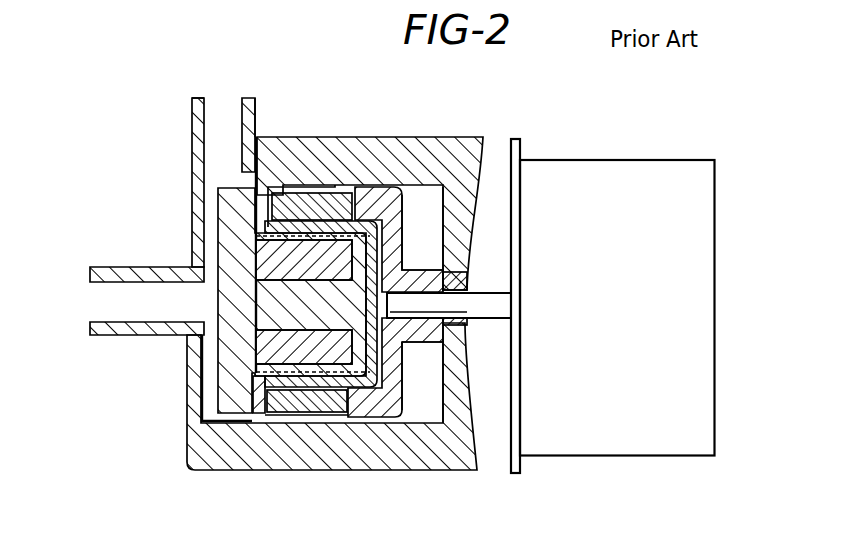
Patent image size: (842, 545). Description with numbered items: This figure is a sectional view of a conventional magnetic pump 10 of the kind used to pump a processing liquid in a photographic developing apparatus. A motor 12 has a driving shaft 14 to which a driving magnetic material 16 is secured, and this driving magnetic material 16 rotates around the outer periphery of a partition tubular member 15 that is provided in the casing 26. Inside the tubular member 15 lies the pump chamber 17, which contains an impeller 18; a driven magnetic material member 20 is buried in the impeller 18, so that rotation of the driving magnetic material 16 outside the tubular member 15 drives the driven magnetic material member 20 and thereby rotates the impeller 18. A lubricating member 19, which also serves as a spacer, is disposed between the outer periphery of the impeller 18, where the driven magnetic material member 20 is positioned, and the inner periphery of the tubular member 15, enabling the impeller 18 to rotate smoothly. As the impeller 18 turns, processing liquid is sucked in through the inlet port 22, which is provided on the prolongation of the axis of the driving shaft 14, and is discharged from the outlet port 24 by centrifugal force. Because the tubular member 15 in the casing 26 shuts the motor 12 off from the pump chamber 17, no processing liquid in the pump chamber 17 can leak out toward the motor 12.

The magnetic pump 10 is at (531, 92).
The motor 12 is at (602, 168).
The driving shaft 14 is at (497, 318).
The partition tubular member 15 is at (401, 187).
The driving magnetic material 16 is at (294, 198).
The pump chamber 17 is at (196, 400).
The impeller 18 is at (228, 335).
The lubricating member 19 is at (358, 220).
The driven magnetic material member 20 is at (253, 253).
The inlet port 22 is at (102, 295).
The outlet port 24 is at (223, 108).
The casing 26 is at (357, 462).